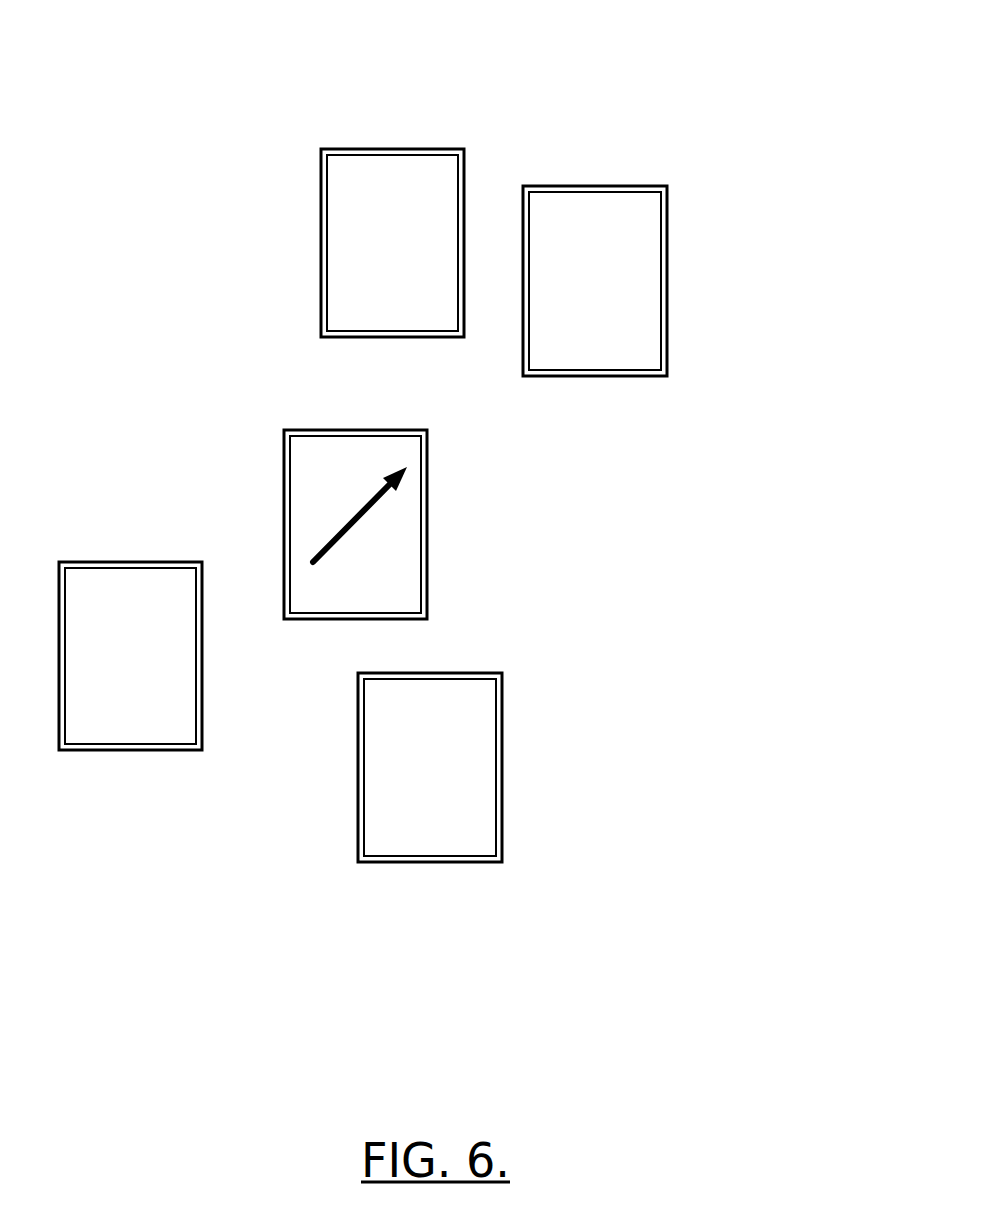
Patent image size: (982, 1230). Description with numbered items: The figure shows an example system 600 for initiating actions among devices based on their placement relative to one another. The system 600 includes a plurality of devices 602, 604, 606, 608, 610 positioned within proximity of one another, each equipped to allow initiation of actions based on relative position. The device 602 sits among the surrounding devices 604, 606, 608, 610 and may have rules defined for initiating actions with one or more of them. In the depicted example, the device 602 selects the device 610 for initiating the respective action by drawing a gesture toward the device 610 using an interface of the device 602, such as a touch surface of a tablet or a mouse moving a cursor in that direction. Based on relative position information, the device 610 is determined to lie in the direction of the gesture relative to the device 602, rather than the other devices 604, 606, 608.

The system 600 is at (764, 57).
The device 602 is at (404, 524).
The device 604 is at (479, 767).
The device 606 is at (179, 656).
The device 608 is at (404, 219).
The device 610 is at (643, 281).